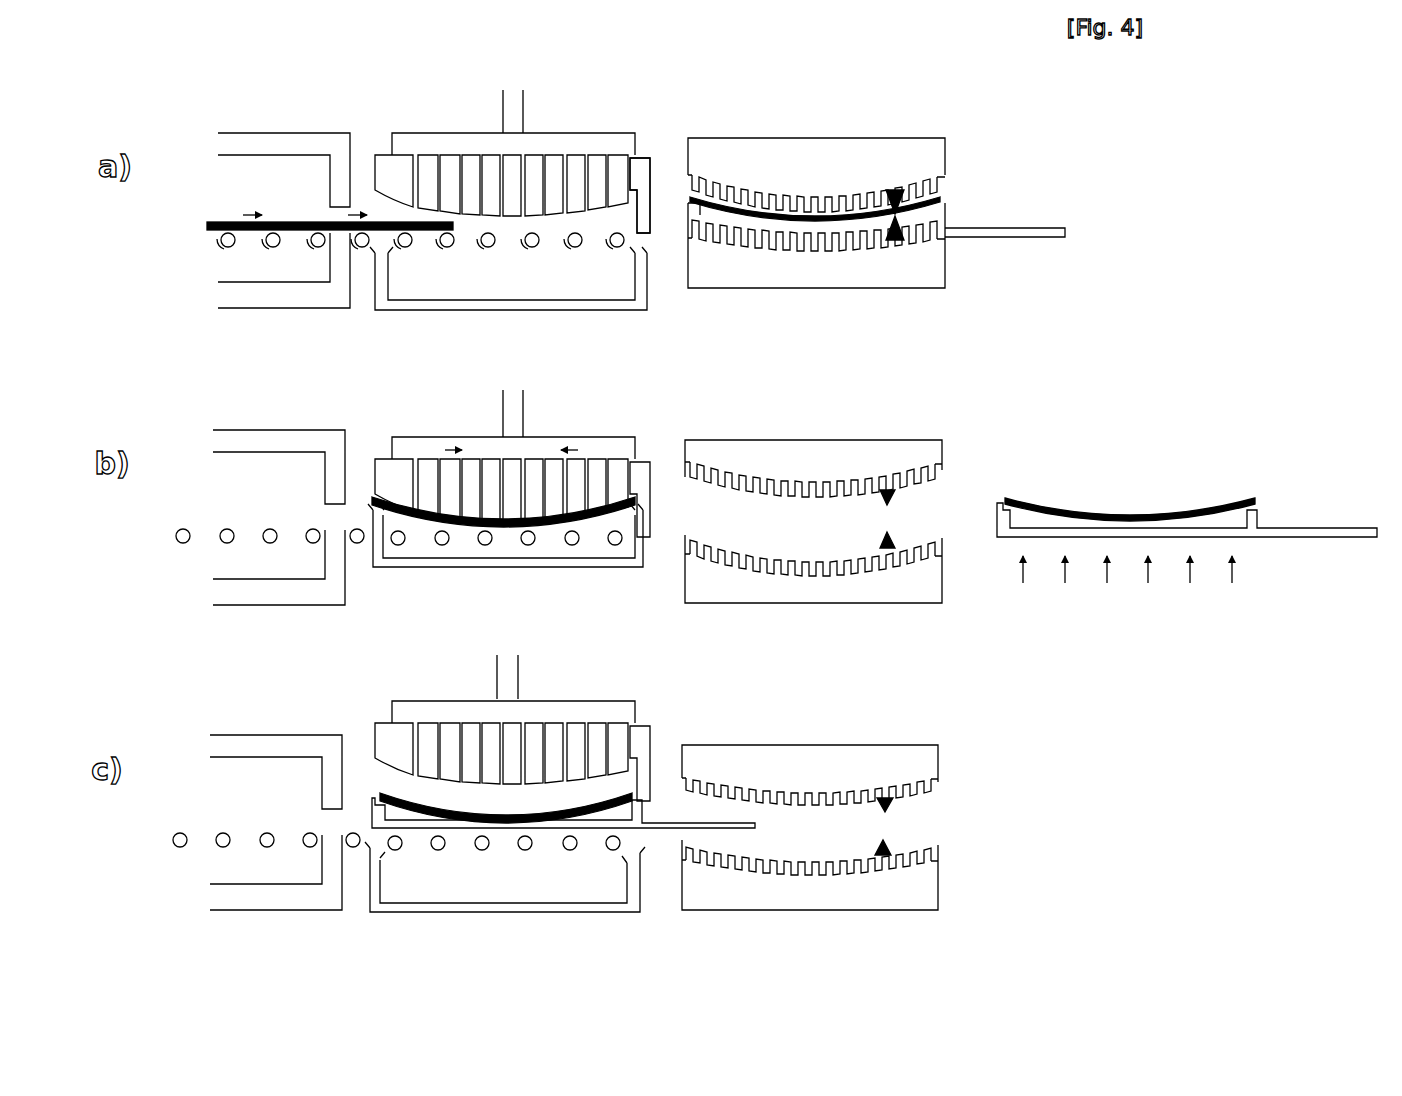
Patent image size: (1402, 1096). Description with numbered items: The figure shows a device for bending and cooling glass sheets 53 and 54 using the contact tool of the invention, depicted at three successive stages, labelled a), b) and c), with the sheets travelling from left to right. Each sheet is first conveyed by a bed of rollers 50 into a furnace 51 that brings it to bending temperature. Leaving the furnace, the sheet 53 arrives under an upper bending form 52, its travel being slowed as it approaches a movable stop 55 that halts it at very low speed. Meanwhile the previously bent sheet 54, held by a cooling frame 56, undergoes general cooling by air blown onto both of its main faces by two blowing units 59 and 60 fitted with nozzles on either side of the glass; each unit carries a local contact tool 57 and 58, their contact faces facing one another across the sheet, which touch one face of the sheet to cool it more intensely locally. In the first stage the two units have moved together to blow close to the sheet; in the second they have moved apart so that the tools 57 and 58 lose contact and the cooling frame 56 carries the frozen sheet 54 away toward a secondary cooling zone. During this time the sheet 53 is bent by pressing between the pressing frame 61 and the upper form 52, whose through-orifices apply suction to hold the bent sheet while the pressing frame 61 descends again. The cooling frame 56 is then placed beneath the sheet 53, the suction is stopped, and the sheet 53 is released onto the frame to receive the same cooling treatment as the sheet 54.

The bed of rollers 50 is at (187, 232).
The furnace 51 is at (275, 157).
The upper bending form 52 is at (470, 160).
The glass sheet 53 is at (297, 222).
The glass sheet 54 is at (830, 179).
The movable stop 55 is at (663, 192).
The cooling frame 56 is at (960, 215).
The local contact tool 57 is at (916, 195).
The local contact tool 58 is at (918, 250).
The blowing unit 59 is at (760, 148).
The blowing unit 60 is at (930, 270).
The pressing frame 61 is at (619, 279).